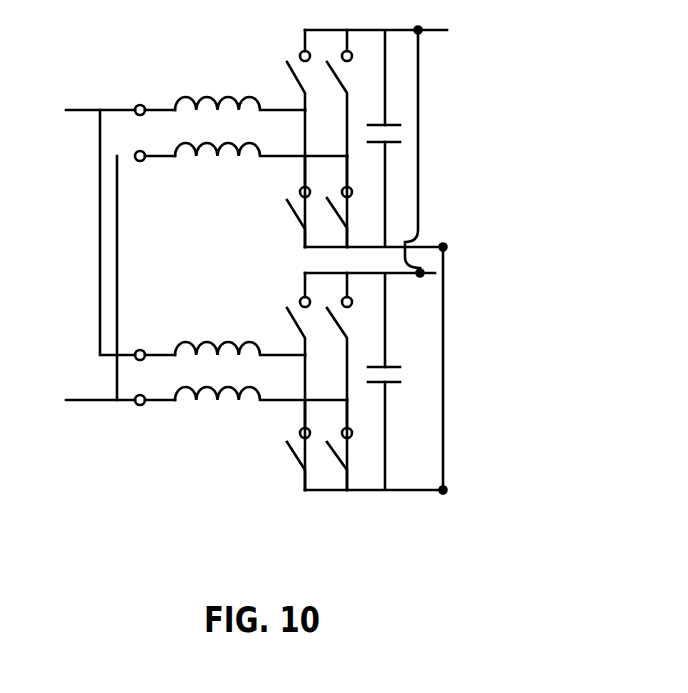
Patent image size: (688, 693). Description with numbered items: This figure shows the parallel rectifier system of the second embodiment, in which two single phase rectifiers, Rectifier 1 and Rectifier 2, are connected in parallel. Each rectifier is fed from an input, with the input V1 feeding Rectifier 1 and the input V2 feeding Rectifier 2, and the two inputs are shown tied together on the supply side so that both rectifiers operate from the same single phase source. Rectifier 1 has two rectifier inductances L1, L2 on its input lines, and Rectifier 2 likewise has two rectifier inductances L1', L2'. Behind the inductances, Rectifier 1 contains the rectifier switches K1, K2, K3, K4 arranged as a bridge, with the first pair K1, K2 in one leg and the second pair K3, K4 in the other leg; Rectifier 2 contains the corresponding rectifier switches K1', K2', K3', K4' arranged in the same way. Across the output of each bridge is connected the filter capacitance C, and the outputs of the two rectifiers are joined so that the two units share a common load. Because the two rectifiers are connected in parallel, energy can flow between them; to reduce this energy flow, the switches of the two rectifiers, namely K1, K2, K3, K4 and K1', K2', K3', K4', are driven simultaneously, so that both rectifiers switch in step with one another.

The first input voltage V1 is at (100, 126).
The second input voltage V2 is at (100, 385).
The rectifier inductance L1 is at (240, 89).
The rectifier inductance L2 is at (261, 136).
The rectifier inductance L1' is at (240, 332).
The rectifier inductance L2' is at (261, 379).
The single phase rectifier Rectifier 1 is at (258, 178).
The single phase rectifier Rectifier 2 is at (258, 422).
The rectifier switch K1 is at (290, 70).
The rectifier switch K2 is at (288, 201).
The rectifier switch K3 is at (351, 93).
The rectifier switch K4 is at (350, 201).
The rectifier switch K1' is at (286, 314).
The rectifier switch K2' is at (282, 445).
The rectifier switch K3' is at (352, 336).
The rectifier switch K4' is at (355, 445).
The filter capacitance C is at (376, 256).